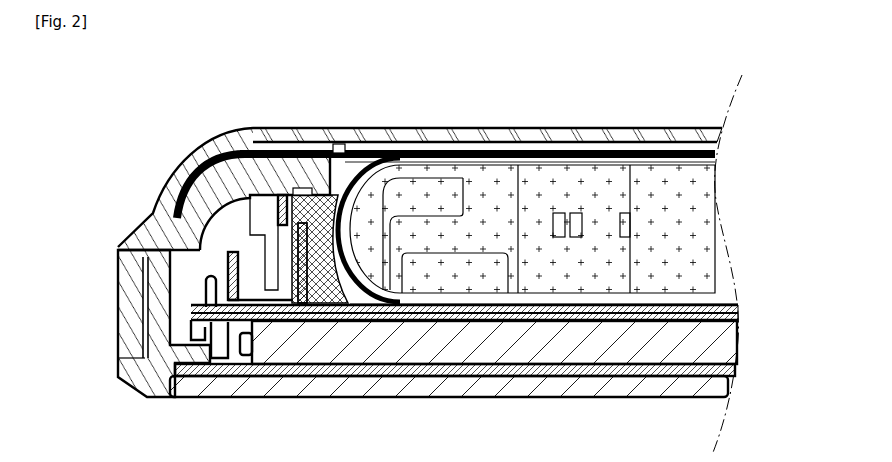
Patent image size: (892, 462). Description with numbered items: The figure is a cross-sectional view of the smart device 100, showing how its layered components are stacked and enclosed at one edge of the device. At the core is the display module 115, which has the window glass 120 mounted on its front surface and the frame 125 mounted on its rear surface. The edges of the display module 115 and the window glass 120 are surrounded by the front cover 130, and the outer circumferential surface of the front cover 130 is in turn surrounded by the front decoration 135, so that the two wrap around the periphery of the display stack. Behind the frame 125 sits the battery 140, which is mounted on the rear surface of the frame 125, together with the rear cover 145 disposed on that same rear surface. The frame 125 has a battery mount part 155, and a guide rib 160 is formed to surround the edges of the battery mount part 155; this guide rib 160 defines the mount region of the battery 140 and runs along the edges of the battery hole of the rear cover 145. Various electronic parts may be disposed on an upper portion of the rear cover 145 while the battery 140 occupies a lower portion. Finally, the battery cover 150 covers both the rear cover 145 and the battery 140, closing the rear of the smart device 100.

The smart device 100 is at (389, 71).
The display module 115 is at (585, 352).
The window glass 120 is at (365, 398).
The frame 125 is at (488, 306).
The front cover 130 is at (141, 383).
The front decoration 135 is at (125, 297).
The battery 140 is at (587, 177).
The rear cover 145 is at (200, 197).
The battery cover 150 is at (510, 136).
The battery mount part 155 is at (628, 301).
The guide rib 160 is at (297, 232).